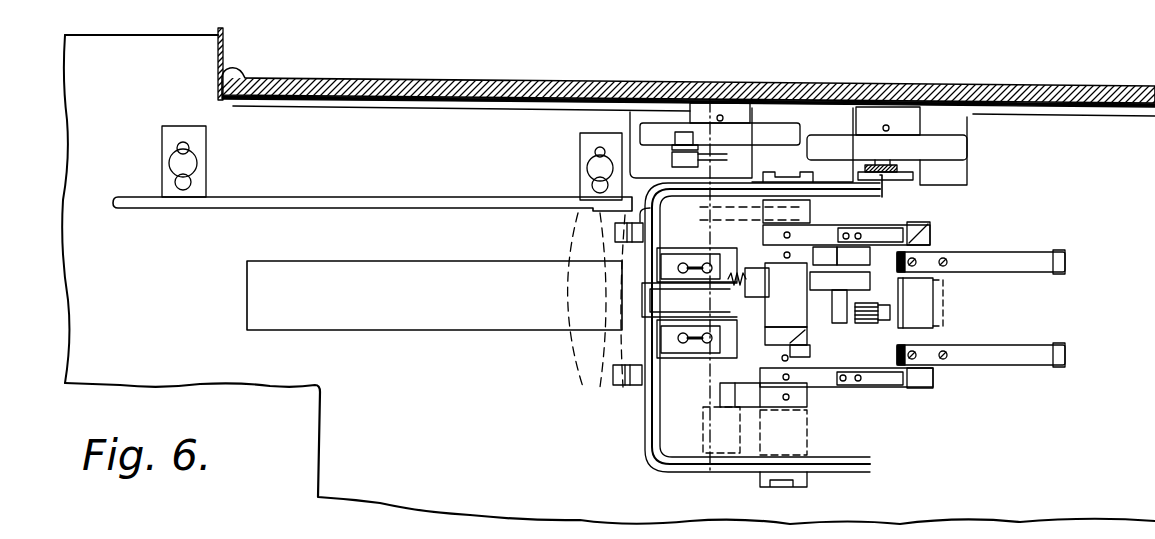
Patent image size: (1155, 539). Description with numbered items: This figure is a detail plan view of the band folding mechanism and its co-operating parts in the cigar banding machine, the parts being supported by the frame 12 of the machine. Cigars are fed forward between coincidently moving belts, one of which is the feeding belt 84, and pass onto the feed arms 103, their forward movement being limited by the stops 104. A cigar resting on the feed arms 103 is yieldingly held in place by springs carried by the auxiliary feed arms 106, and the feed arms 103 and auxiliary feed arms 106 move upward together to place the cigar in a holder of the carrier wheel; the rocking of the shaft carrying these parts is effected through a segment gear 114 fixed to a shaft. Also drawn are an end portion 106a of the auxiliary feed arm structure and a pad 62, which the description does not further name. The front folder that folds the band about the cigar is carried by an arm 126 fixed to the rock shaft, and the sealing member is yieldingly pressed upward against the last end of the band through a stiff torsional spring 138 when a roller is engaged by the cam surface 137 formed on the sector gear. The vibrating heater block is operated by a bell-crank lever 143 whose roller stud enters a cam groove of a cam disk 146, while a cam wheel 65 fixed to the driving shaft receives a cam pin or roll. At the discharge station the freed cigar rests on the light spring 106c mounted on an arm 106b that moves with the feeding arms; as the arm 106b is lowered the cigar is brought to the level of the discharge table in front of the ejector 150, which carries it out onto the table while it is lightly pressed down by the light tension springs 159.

The frame 12 is at (540, 101).
The hatched pad 62 is at (890, 174).
The cam wheel 65 is at (965, 148).
The feeding belt 84 is at (426, 320).
The feed arms 103 is at (680, 380).
The stops 104 is at (687, 263).
The auxiliary feed arms 106 is at (649, 206).
The bracket end portions 106a is at (876, 486).
The arm 106b is at (932, 239).
The light spring 106c is at (904, 235).
The segment gear 114 is at (720, 402).
The arm 126 is at (782, 306).
The cam surface 137 is at (803, 341).
The torsional spring 138 is at (881, 324).
The bell-crank lever 143 is at (673, 160).
The cam disk 146 is at (792, 136).
The ejector 150 is at (907, 311).
The light tension springs 159 is at (1067, 262).